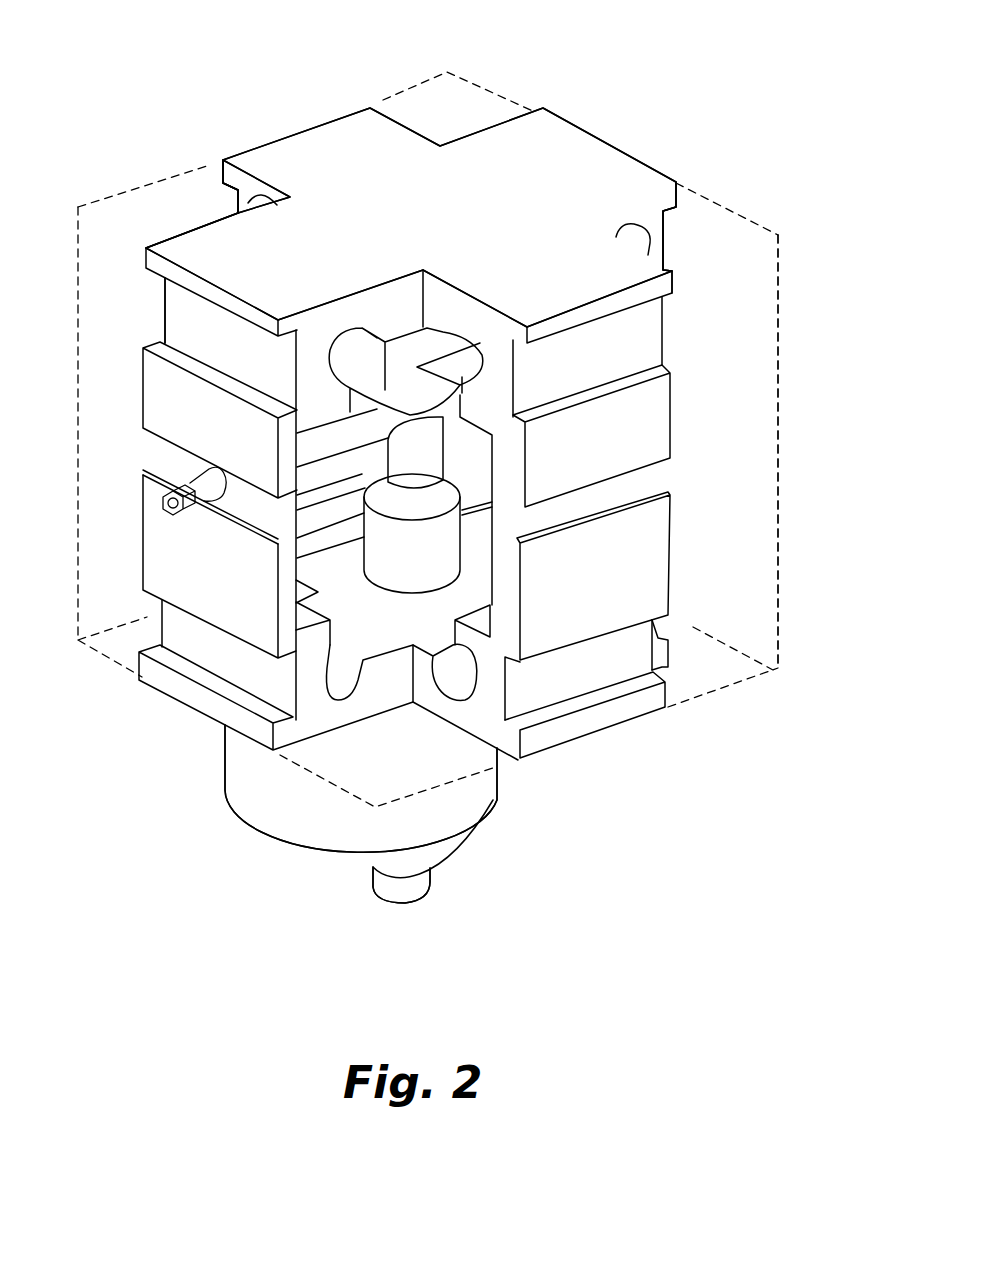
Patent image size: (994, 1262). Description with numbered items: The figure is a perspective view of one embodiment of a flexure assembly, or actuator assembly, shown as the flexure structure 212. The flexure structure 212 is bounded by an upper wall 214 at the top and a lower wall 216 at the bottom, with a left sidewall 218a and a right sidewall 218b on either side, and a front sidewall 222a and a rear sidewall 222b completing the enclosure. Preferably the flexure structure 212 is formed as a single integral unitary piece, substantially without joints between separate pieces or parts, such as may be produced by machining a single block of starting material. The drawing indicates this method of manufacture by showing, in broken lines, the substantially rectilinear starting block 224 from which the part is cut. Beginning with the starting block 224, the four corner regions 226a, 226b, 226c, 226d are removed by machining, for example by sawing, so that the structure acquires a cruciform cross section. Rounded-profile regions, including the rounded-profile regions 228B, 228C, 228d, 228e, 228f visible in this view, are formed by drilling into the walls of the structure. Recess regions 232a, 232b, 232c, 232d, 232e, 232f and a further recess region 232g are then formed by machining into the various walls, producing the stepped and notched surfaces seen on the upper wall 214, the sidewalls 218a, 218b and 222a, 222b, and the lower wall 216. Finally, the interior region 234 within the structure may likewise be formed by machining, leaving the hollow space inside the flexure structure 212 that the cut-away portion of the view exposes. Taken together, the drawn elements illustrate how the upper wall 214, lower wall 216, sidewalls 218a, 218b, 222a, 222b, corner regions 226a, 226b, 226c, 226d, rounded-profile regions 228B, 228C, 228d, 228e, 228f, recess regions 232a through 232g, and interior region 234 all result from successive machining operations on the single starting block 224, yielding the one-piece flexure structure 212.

The flexure structure 212 is at (760, 219).
The upper wall 214 is at (512, 167).
The lower wall 216 is at (508, 760).
The left sidewall 218a is at (168, 388).
The right sidewall 218b is at (667, 253).
The front sidewall 222a is at (657, 522).
The rear sidewall 222b is at (237, 203).
The starting block 224 is at (780, 383).
The corner region 226a is at (447, 72).
The corner region 226b is at (90, 203).
The corner region 226c is at (707, 198).
The corner region 226d is at (347, 790).
The rounded-profile region 228B is at (345, 692).
The rounded-profile region 228C is at (477, 682).
The rounded-profile region 228d is at (460, 327).
The rounded-profile region 228e is at (633, 222).
The rounded-profile region 228f is at (250, 200).
The recess region 232a is at (220, 388).
The recess region 232b is at (245, 663).
The recess region 232c is at (591, 429).
The recess region 232d is at (586, 689).
The recess region 232e is at (663, 235).
The recess region 232f is at (223, 180).
The recess region 232g is at (250, 500).
The interior region 234 is at (318, 592).